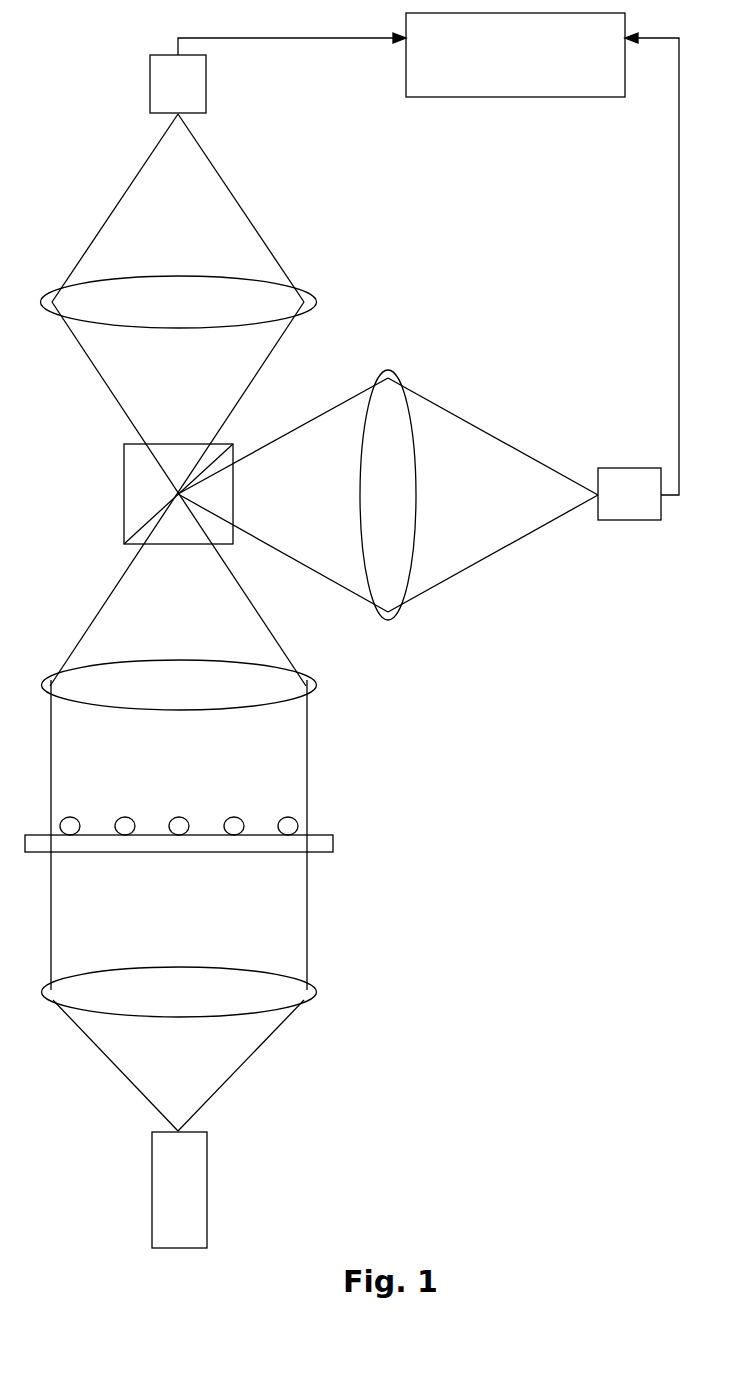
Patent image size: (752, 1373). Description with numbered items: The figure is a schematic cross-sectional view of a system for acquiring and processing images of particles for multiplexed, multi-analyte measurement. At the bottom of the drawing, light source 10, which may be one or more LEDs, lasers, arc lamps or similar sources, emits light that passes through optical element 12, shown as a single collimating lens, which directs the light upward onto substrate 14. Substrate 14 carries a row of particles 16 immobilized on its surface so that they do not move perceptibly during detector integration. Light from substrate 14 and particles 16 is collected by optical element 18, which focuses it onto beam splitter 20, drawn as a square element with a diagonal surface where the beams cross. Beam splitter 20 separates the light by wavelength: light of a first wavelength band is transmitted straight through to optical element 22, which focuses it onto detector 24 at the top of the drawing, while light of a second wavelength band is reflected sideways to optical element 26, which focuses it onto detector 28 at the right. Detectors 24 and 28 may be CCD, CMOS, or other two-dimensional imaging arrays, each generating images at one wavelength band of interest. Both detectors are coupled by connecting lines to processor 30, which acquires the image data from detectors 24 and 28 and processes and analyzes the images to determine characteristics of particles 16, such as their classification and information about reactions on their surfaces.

The light source 10 is at (207, 1212).
The optical element 12 is at (315, 990).
The substrate 14 is at (333, 840).
The particles 16 is at (292, 818).
The optical element 18 is at (316, 680).
The beam splitter 20 is at (124, 486).
The optical element 22 is at (315, 300).
The detector 24 is at (150, 88).
The optical element 26 is at (388, 372).
The detector 28 is at (645, 520).
The processor 30 is at (500, 79).